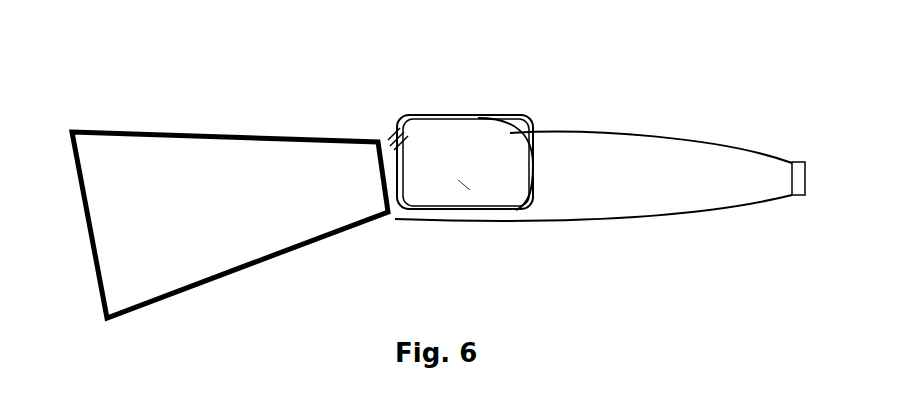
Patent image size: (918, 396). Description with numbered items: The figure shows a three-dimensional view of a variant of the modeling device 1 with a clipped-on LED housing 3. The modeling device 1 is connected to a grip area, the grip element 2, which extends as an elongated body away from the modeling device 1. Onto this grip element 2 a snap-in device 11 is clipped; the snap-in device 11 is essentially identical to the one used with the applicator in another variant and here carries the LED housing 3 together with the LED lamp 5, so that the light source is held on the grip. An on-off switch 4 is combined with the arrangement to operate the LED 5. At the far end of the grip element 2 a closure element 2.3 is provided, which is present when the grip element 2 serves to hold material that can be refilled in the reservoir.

The modeling device 1 is at (177, 172).
The grip element 2 is at (695, 157).
The closure element 2.3 is at (797, 173).
The LED housing 3 is at (478, 122).
The on-off switch 4 is at (430, 115).
The LED 5 is at (397, 138).
The snap-in device 11 is at (458, 180).